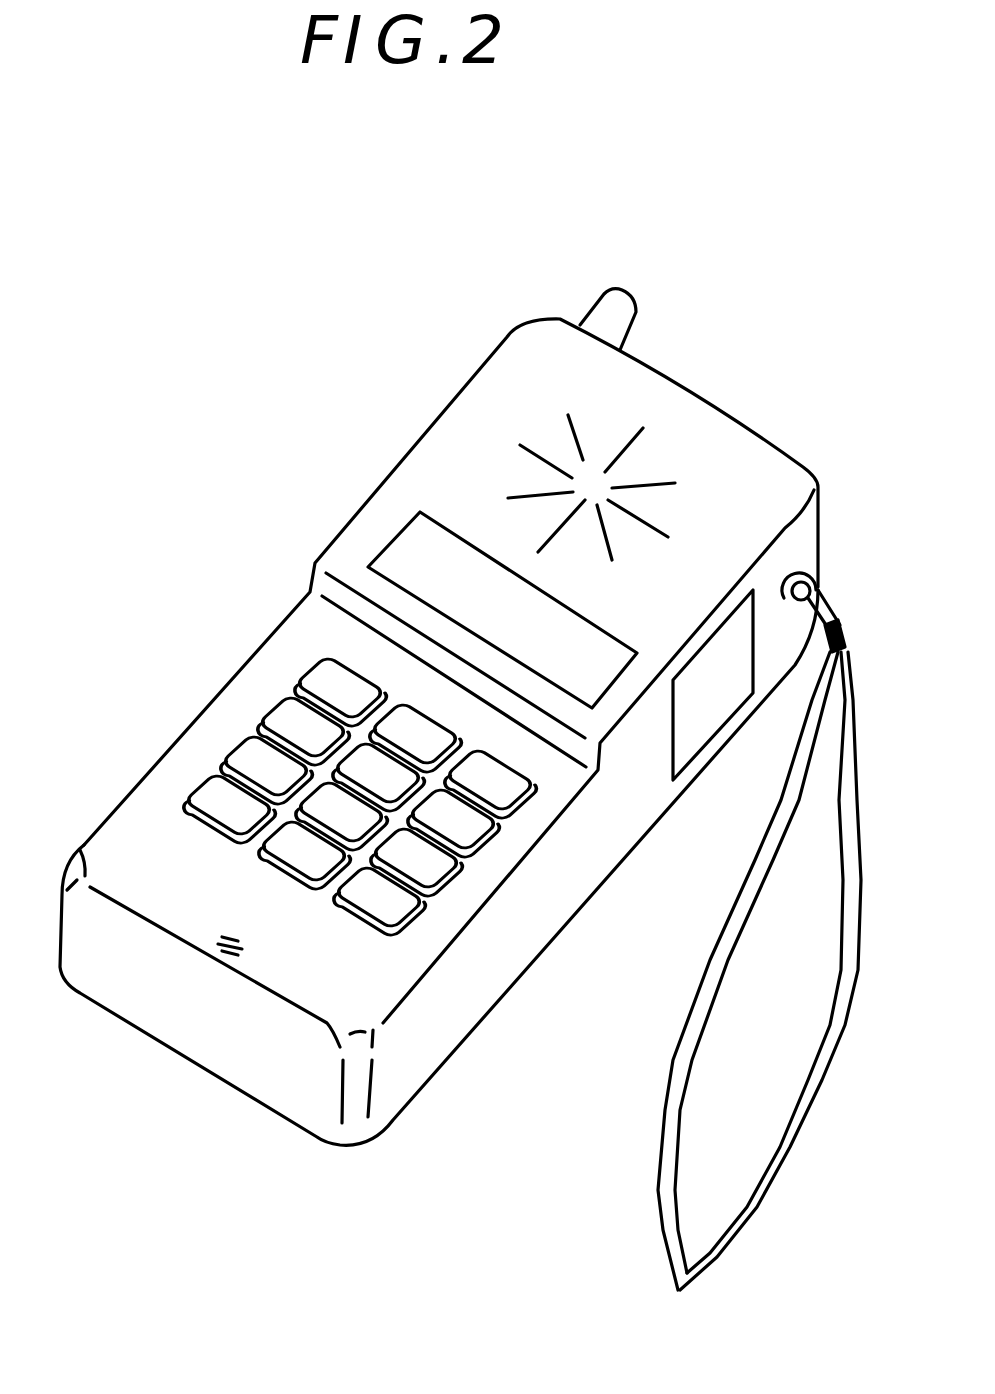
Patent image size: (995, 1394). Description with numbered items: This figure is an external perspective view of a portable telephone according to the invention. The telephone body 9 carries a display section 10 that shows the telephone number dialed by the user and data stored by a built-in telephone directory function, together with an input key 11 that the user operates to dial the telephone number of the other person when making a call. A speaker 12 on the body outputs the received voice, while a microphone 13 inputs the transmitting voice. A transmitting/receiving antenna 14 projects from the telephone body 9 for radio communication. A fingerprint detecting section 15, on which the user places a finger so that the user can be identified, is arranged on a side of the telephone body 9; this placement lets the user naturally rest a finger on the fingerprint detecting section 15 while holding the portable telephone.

The telephone body 9 is at (773, 482).
The display section 10 is at (502, 610).
The input key 11 is at (323, 673).
The speaker 12 is at (591, 480).
The microphone 13 is at (214, 926).
The transmitting/receiving antenna 14 is at (637, 302).
The fingerprint detecting section 15 is at (705, 728).